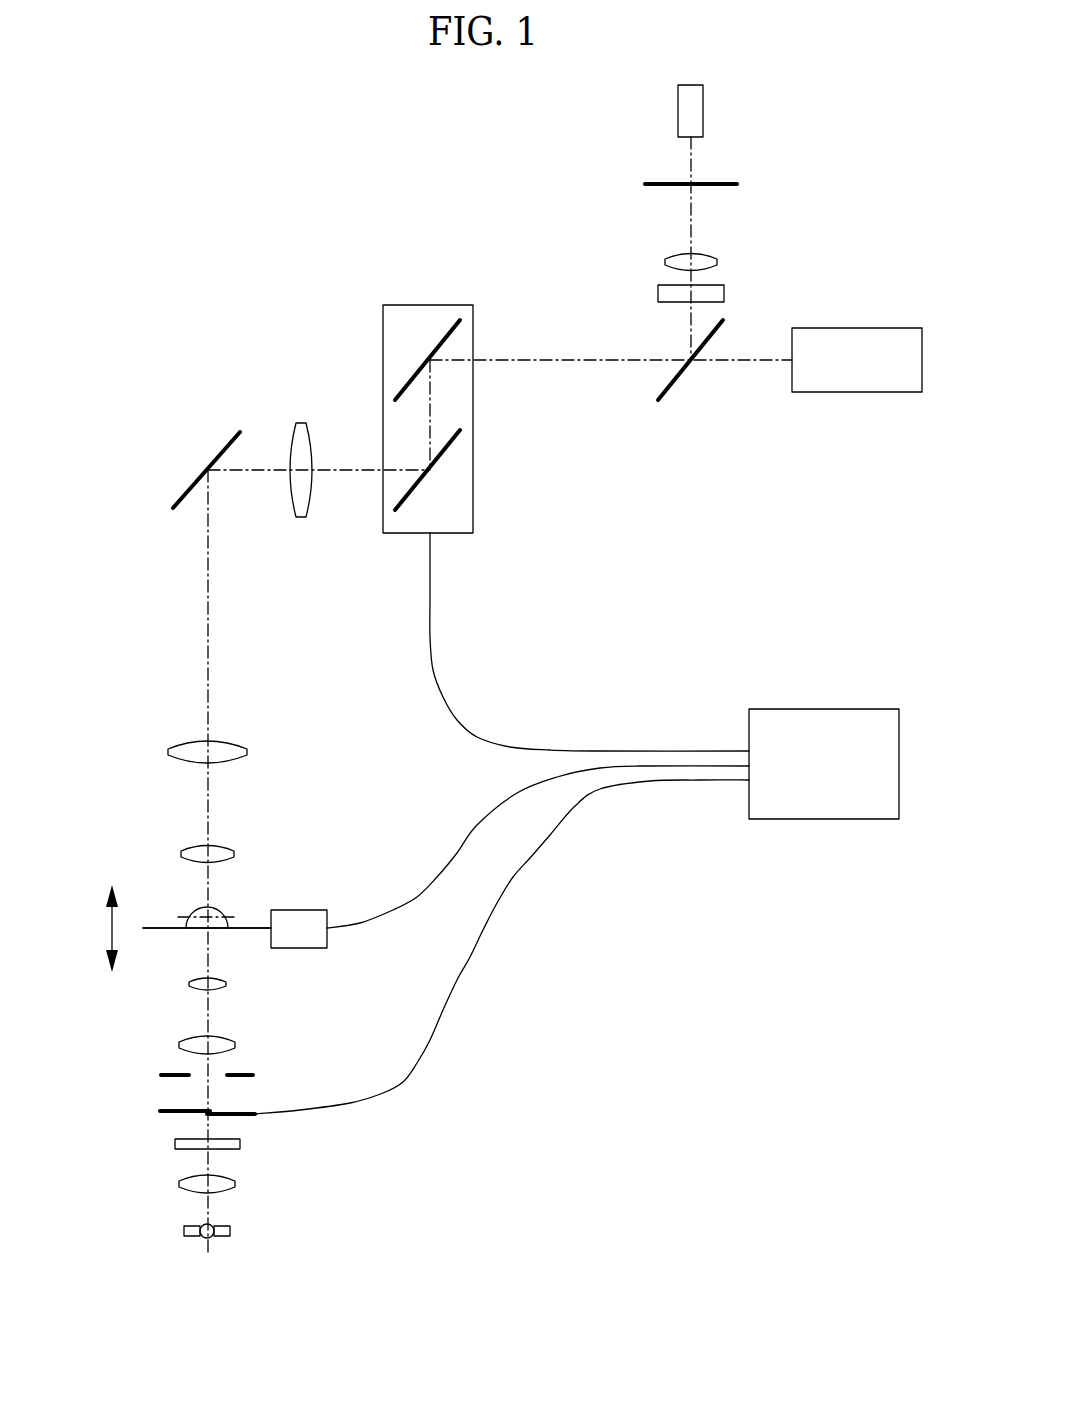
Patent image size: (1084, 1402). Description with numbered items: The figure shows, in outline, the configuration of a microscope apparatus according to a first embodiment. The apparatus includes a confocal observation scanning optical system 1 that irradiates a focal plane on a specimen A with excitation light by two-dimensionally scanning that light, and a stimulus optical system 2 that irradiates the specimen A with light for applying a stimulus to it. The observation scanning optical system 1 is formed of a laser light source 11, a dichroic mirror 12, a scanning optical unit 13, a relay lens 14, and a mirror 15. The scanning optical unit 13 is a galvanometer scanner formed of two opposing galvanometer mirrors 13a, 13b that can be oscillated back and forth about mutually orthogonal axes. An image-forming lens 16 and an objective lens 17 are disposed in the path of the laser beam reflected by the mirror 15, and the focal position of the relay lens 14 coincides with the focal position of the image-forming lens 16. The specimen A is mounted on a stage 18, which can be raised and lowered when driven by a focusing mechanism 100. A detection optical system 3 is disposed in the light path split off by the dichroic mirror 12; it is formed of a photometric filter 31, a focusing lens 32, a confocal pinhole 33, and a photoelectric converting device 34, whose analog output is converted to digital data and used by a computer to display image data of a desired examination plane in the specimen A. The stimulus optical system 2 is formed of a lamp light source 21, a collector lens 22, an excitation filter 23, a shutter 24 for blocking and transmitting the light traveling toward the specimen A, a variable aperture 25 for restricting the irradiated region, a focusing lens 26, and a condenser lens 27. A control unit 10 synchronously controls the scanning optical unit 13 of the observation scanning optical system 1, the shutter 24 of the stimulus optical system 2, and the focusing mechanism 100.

The confocal observation scanning optical system 1 is at (628, 458).
The stimulus optical system 2 is at (308, 1130).
The detection optical system 3 is at (768, 204).
The control unit 10 is at (822, 709).
The laser light source 11 is at (878, 328).
The dichroic mirror 12 is at (675, 385).
The scanning optical unit 13 is at (474, 402).
The galvanometer mirror 13a is at (445, 333).
The galvanometer mirror 13b is at (452, 447).
The relay lens 14 is at (300, 423).
The mirror 15 is at (218, 457).
The image-forming lens 16 is at (168, 751).
The objective lens 17 is at (181, 851).
The stage 18 is at (252, 928).
The focusing mechanism 100 is at (300, 910).
The specimen A is at (195, 912).
The lamp light source 21 is at (230, 1231).
The collector lens 22 is at (235, 1184).
The excitation filter 23 is at (175, 1144).
The shutter 24 is at (172, 1108).
The variable aperture 25 is at (243, 1070).
The focusing lens 26 is at (179, 1045).
The condenser lens 27 is at (226, 984).
The photometric filter 31 is at (658, 292).
The focusing lens 32 is at (665, 262).
The confocal pinhole 33 is at (665, 183).
The photoelectric converting device 34 is at (703, 108).